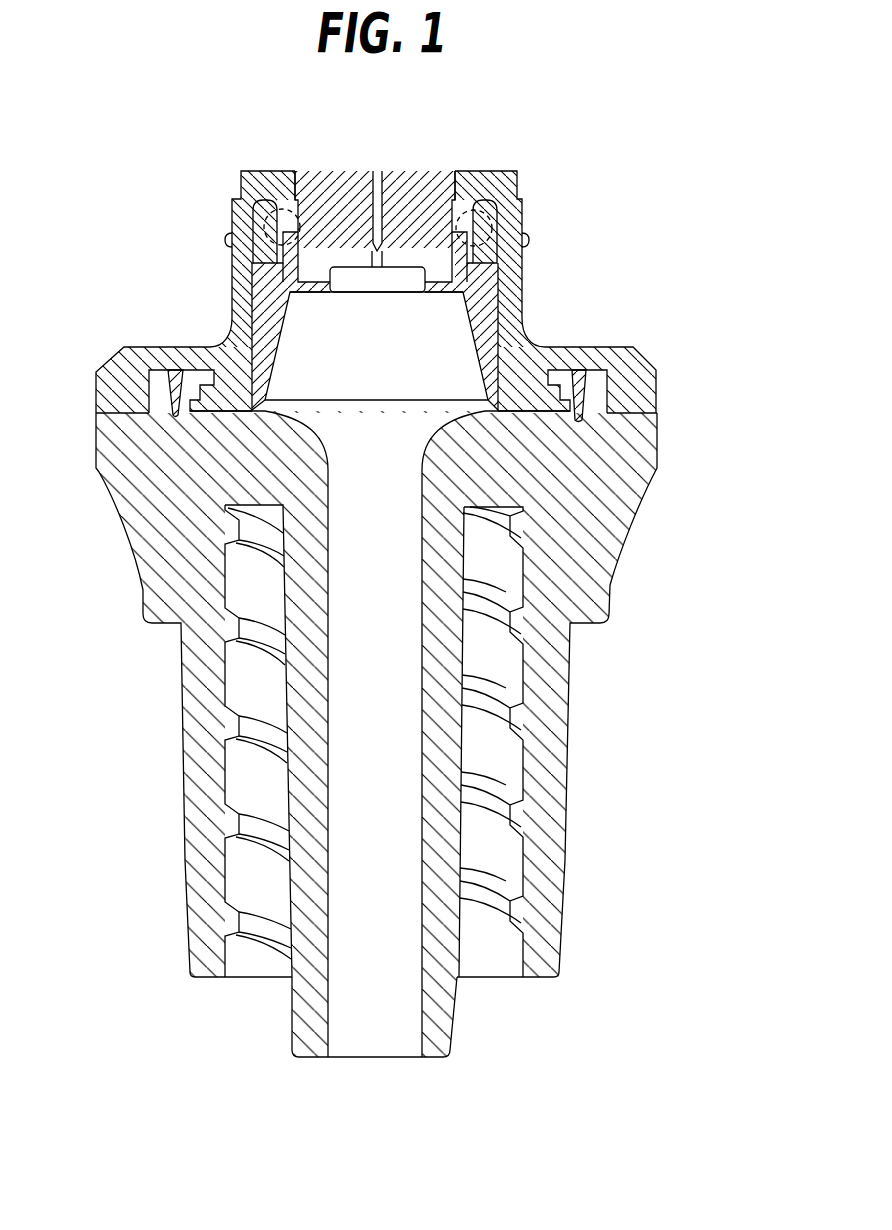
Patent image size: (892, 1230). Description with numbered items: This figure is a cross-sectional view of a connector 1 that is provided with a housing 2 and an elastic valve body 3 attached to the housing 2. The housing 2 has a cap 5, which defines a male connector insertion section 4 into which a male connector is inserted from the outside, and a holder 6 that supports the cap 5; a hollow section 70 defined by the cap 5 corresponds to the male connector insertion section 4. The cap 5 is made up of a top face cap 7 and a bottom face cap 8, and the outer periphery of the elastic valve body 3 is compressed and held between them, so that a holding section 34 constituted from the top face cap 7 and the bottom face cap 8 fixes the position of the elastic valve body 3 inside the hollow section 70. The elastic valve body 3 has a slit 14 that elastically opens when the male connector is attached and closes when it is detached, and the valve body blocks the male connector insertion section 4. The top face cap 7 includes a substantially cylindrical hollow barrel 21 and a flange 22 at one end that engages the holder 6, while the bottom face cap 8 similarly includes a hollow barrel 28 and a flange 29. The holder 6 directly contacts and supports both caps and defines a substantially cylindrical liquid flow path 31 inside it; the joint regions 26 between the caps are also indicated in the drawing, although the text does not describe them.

The connector 1 is at (145, 855).
The housing 2 is at (765, 325).
The elastic valve body 3 is at (330, 172).
The male connector insertion section 4 is at (302, 346).
The cap 5 is at (732, 268).
The holder 6 is at (567, 479).
The top face cap 7 is at (700, 250).
The bottom face cap 8 is at (700, 365).
The slit 14 is at (378, 170).
The hollow barrel 21 is at (512, 235).
The flange 22 is at (578, 358).
The welded joint 26 is at (295, 178).
The hollow barrel 28 is at (497, 358).
The flange 29 is at (543, 402).
The liquid flow path 31 is at (375, 755).
The holding section 34 is at (262, 216).
The hollow section 70 is at (345, 348).